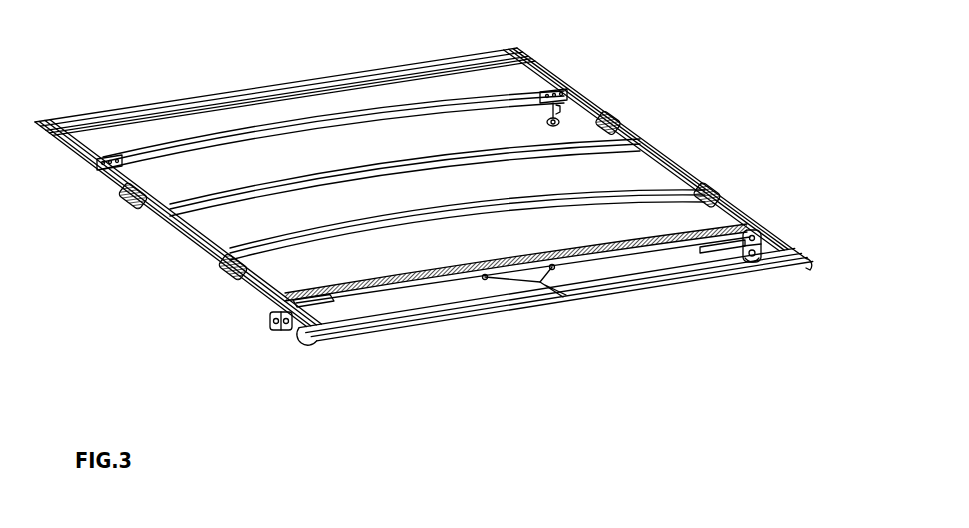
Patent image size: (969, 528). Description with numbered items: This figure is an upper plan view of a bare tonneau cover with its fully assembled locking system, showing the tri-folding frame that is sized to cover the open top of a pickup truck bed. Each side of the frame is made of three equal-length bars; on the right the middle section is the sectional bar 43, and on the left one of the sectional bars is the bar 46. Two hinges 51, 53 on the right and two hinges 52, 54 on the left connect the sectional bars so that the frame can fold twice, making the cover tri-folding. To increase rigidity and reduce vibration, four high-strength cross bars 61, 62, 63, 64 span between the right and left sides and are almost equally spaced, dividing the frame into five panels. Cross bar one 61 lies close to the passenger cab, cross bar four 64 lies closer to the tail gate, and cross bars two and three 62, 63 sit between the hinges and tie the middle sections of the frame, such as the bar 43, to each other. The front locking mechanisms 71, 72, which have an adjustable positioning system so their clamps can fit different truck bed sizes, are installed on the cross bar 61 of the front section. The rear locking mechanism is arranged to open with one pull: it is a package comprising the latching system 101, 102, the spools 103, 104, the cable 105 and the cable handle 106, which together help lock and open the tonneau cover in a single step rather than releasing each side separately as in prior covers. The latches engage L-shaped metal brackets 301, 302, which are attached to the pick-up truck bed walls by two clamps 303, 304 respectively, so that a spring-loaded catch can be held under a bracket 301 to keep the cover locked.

The middle sectional bar 43 is at (662, 152).
The sectional bar 46 is at (248, 297).
The hinge 51 is at (618, 119).
The hinge 52 is at (123, 203).
The hinge 53 is at (718, 194).
The hinge 54 is at (225, 279).
The cross bar one 61 is at (190, 143).
The cross bar two 62 is at (243, 190).
The cross bar three 63 is at (307, 237).
The cross bar four 64 is at (380, 277).
The front locking mechanism 71 is at (568, 95).
The front locking mechanism 72 is at (112, 176).
The latching system 101 is at (722, 248).
The latching system 102 is at (318, 306).
The spool 103 is at (556, 268).
The spool 104 is at (483, 279).
The cable 105 is at (514, 283).
The cable handle 106 is at (545, 288).
The L-shaped metal bracket 301 is at (761, 236).
The L-shaped metal bracket 302 is at (298, 335).
The clamp 303 is at (757, 263).
The clamp 304 is at (280, 332).